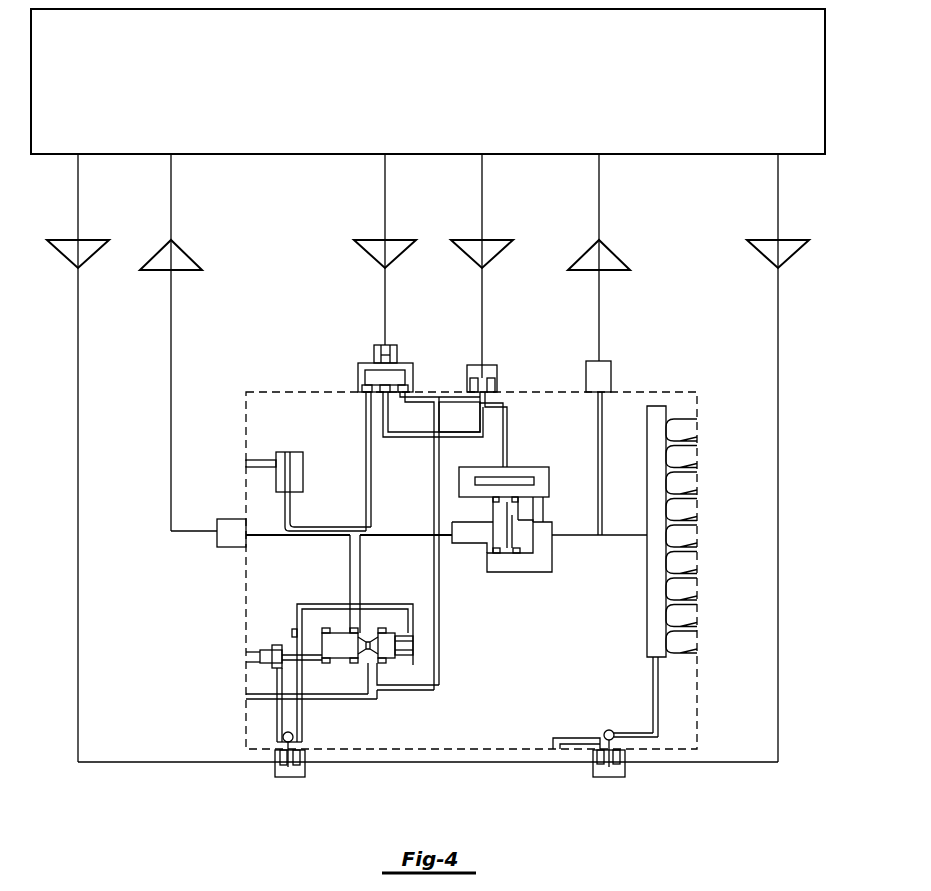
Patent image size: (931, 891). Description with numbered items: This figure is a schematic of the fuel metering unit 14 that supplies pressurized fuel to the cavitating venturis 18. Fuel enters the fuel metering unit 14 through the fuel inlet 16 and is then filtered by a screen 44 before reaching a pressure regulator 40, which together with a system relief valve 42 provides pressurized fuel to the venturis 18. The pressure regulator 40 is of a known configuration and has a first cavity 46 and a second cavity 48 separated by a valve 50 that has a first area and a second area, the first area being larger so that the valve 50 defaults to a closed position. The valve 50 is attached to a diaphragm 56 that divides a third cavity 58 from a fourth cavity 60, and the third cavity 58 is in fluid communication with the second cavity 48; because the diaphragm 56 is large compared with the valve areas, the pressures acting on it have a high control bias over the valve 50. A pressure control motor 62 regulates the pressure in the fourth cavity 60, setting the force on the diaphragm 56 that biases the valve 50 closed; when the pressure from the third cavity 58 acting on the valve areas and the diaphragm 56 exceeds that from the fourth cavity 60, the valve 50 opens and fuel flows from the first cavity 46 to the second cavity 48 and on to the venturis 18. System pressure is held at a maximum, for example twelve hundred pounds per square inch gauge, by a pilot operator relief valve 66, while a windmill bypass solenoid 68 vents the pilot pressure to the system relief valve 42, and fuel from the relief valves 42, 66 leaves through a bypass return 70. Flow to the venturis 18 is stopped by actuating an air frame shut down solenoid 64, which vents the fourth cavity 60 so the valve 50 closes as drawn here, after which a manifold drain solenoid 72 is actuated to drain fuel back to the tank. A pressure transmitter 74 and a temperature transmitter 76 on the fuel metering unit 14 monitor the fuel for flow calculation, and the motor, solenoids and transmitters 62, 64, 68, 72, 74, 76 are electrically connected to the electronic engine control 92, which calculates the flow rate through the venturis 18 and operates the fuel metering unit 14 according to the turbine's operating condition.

The electronic engine control 92 is at (418, 121).
The fuel metering unit 14 is at (243, 368).
The fuel inlet 16 is at (246, 463).
The venturis 18 is at (697, 567).
The pressure regulator 40 is at (532, 525).
The system relief valve 42 is at (392, 672).
The screen 44 is at (287, 452).
The first cavity 46 is at (460, 545).
The second cavity 48 is at (545, 545).
The valve 50 is at (505, 518).
The diaphragm 56 is at (487, 478).
The third cavity 58 is at (545, 492).
The fourth cavity 60 is at (520, 468).
The pressure control motor 62 is at (359, 378).
The air frame shut down solenoid 64 is at (466, 378).
The pilot operator relief valve 66 is at (268, 648).
The windmill bypass solenoid 68 is at (310, 762).
The bypass return 70 is at (246, 697).
The manifold drain solenoid 72 is at (590, 763).
The pressure transmitter 74 is at (612, 378).
The temperature transmitter 76 is at (230, 547).